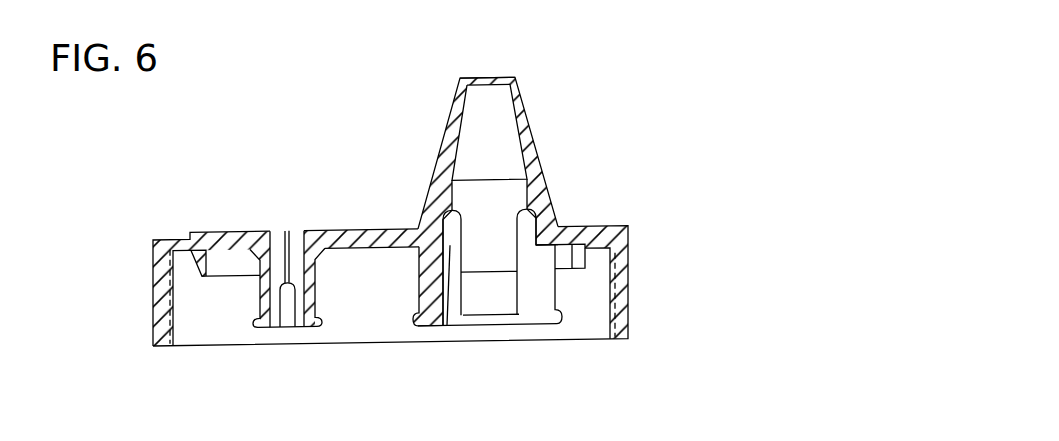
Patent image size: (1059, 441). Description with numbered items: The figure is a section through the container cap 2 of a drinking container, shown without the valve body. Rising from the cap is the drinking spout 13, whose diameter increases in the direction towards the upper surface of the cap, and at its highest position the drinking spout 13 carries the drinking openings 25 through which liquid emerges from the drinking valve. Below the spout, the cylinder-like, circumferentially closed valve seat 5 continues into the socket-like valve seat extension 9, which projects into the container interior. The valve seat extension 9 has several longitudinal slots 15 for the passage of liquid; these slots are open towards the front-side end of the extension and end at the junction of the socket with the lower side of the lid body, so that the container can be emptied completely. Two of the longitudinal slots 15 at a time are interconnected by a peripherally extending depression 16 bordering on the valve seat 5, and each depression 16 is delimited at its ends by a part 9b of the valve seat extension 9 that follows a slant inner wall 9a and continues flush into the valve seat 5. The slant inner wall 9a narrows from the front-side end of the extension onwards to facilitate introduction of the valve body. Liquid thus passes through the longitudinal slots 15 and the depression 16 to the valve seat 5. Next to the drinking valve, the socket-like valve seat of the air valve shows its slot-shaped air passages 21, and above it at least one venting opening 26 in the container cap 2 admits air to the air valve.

The container cap 2 is at (181, 231).
The valve seat 5 is at (443, 180).
The valve seat extension 9 is at (565, 313).
The slant inner wall 9a is at (493, 303).
The part of the valve seat extension 9b is at (498, 262).
The drinking spout 13 is at (450, 127).
The longitudinal slots 15 is at (540, 267).
The peripherally extending depression 16 is at (424, 226).
The slot-shaped air passages 21 is at (285, 232).
The drinking openings 25 is at (488, 78).
The venting opening 26 is at (278, 233).